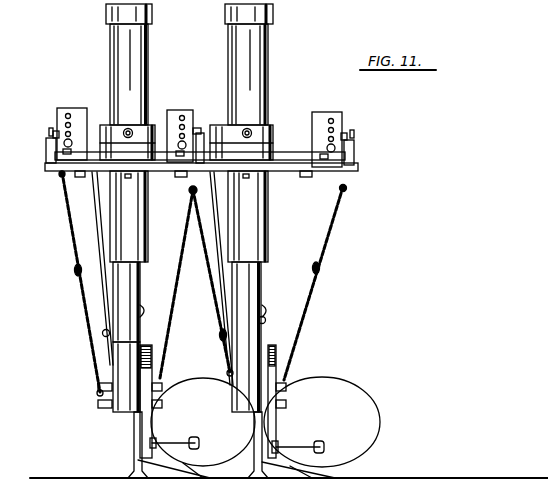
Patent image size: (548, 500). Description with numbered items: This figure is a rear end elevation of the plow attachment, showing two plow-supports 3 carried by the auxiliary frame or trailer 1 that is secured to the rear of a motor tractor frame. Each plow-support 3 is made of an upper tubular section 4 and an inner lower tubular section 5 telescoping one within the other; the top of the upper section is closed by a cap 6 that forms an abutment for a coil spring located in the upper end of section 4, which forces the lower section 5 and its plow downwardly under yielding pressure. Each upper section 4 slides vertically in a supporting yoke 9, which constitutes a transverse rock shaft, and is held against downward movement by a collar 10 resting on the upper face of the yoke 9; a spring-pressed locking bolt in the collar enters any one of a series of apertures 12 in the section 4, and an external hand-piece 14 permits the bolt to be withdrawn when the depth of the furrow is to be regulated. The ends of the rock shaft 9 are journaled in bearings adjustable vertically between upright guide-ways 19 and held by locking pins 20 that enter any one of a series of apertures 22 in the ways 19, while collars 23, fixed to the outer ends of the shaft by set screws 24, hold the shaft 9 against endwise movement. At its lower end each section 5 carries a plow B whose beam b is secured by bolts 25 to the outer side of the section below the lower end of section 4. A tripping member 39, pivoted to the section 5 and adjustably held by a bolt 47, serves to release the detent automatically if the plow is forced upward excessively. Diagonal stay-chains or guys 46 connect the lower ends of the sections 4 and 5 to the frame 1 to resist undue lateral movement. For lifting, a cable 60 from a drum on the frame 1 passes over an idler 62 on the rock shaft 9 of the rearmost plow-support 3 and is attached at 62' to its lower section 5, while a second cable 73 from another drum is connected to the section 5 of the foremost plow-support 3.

The auxiliary frame or trailer 1 is at (50, 166).
The plow-support 3 is at (136, 289).
The upper tubular section 4 is at (110, 52).
The inner lower tubular section 5 is at (112, 352).
The cap 6 is at (109, 14).
The supporting yoke 9 is at (46, 150).
The collar 10 is at (127, 143).
The apertures 12 is at (129, 216).
The hand-piece 14 is at (128, 129).
The upright guide-ways 19 is at (85, 110).
The locking pins 20 is at (71, 140).
The apertures 22 is at (68, 113).
The collars 23 is at (50, 142).
The set screws 24 is at (55, 131).
The bolts 25 is at (160, 388).
The tripping member 39 is at (146, 309).
The diagonal stay-chains or guys 46 is at (85, 306).
The bolt 47 is at (103, 332).
The cable 60 is at (101, 241).
The idler 62 is at (108, 281).
The attachment point 62' is at (126, 365).
The cable 73 is at (226, 268).
The plow B is at (153, 374).
The beam b is at (145, 344).